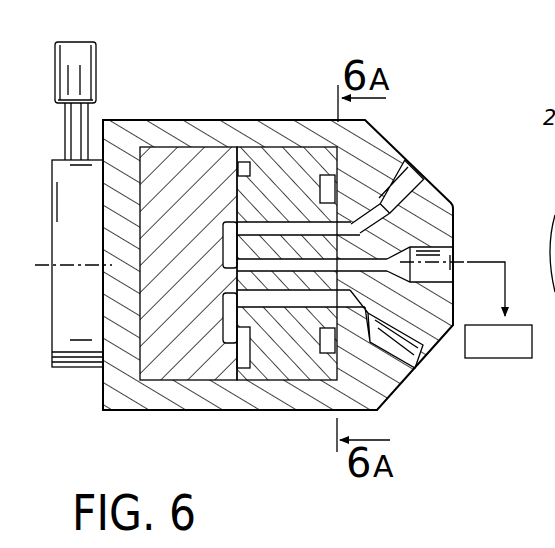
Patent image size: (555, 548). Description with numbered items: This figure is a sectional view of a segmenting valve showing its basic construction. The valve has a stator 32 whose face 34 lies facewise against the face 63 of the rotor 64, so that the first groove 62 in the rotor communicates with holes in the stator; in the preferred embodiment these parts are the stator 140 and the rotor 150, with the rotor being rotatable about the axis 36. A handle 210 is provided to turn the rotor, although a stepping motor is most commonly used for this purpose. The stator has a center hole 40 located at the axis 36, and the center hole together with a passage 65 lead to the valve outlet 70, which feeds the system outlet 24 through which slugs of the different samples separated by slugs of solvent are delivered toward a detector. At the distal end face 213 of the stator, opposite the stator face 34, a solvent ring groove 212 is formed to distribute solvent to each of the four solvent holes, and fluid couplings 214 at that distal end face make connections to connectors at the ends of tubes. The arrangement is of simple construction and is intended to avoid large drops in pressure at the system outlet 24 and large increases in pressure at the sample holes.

The handle 210 is at (55, 63).
The rotor 150 is at (168, 152).
The rotor 64 is at (173, 154).
The face of the stator 34 is at (213, 152).
The stator 140 is at (250, 150).
The stator 32 is at (284, 146).
The solvent ring groove 212 is at (303, 150).
The distal end face of the stator 213 is at (383, 150).
The fluid couplings 214 is at (403, 197).
The valve outlet 70 is at (420, 246).
The axis 36 is at (470, 262).
The system outlet 24 is at (503, 290).
The passage 65 is at (413, 362).
The face of the rotor 63 is at (300, 306).
The center hole 40 is at (292, 272).
The first groove 62 is at (228, 220).